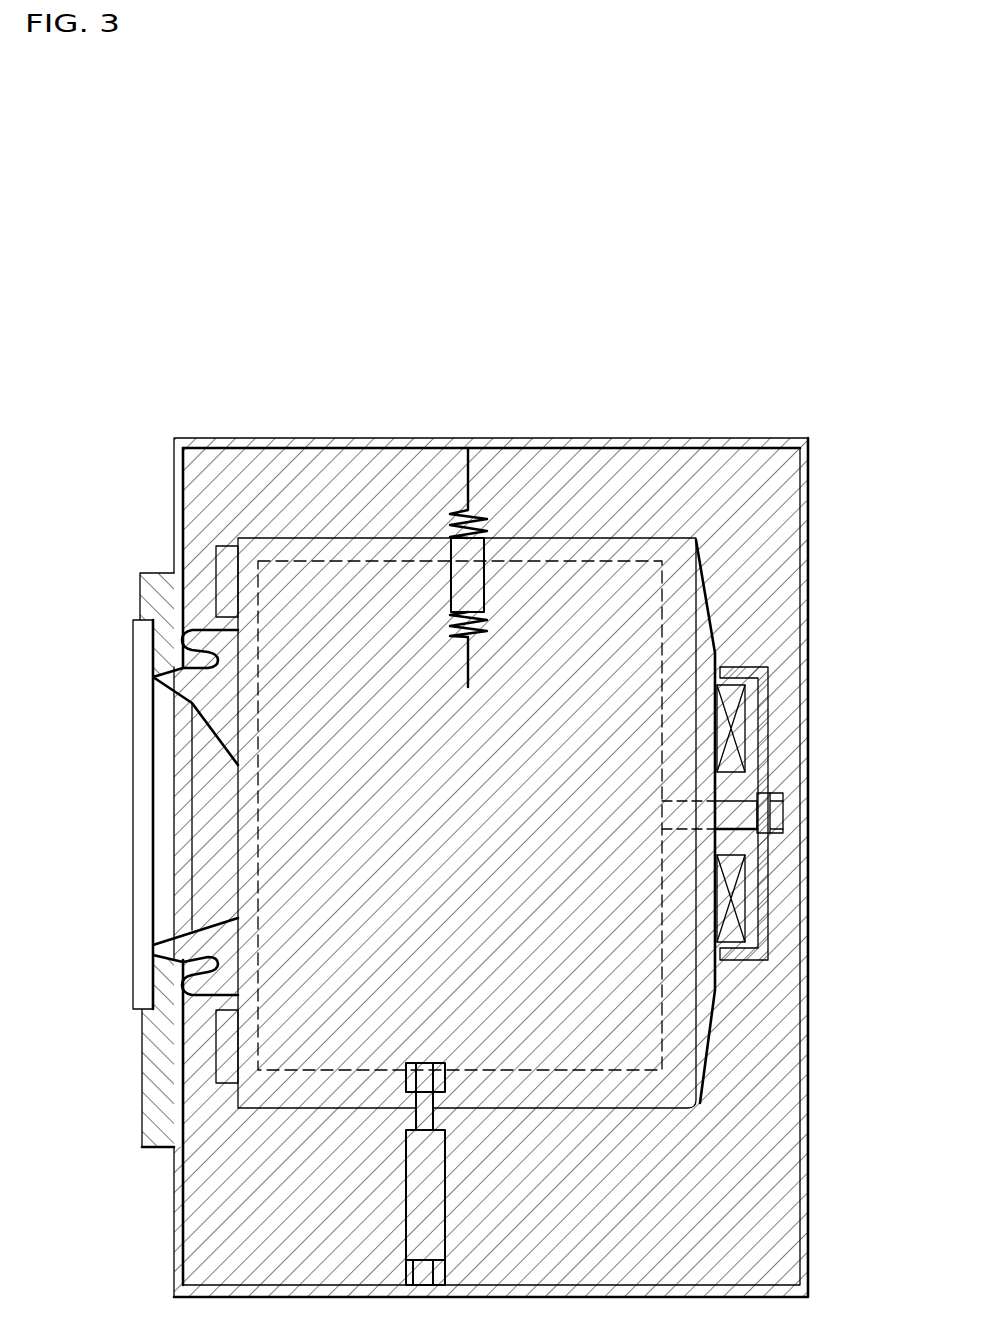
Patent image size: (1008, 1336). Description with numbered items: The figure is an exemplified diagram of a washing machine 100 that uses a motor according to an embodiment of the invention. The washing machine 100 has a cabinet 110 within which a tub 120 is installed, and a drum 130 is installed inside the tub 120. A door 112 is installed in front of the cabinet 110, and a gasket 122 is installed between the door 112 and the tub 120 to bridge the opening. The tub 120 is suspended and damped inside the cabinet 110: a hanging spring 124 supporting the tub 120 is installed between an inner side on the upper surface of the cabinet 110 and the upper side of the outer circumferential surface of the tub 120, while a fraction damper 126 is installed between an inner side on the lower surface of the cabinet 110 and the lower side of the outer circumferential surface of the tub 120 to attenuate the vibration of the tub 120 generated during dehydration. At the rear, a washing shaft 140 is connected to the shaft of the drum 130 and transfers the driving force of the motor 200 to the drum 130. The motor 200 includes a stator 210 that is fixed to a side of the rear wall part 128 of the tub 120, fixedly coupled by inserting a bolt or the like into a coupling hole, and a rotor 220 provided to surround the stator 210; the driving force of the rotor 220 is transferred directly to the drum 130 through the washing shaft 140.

The washing machine 100 is at (200, 226).
The cabinet 110 is at (268, 438).
The door 112 is at (140, 828).
The tub 120 is at (607, 538).
The gasket 122 is at (208, 999).
The hanging spring 124 is at (478, 510).
The fraction damper 126 is at (432, 1203).
The rear wall part 128 is at (705, 625).
The drum 130 is at (367, 561).
The washing shaft 140 is at (737, 813).
The motor 200 is at (783, 813).
The stator 210 is at (738, 727).
The rotor 220 is at (765, 692).